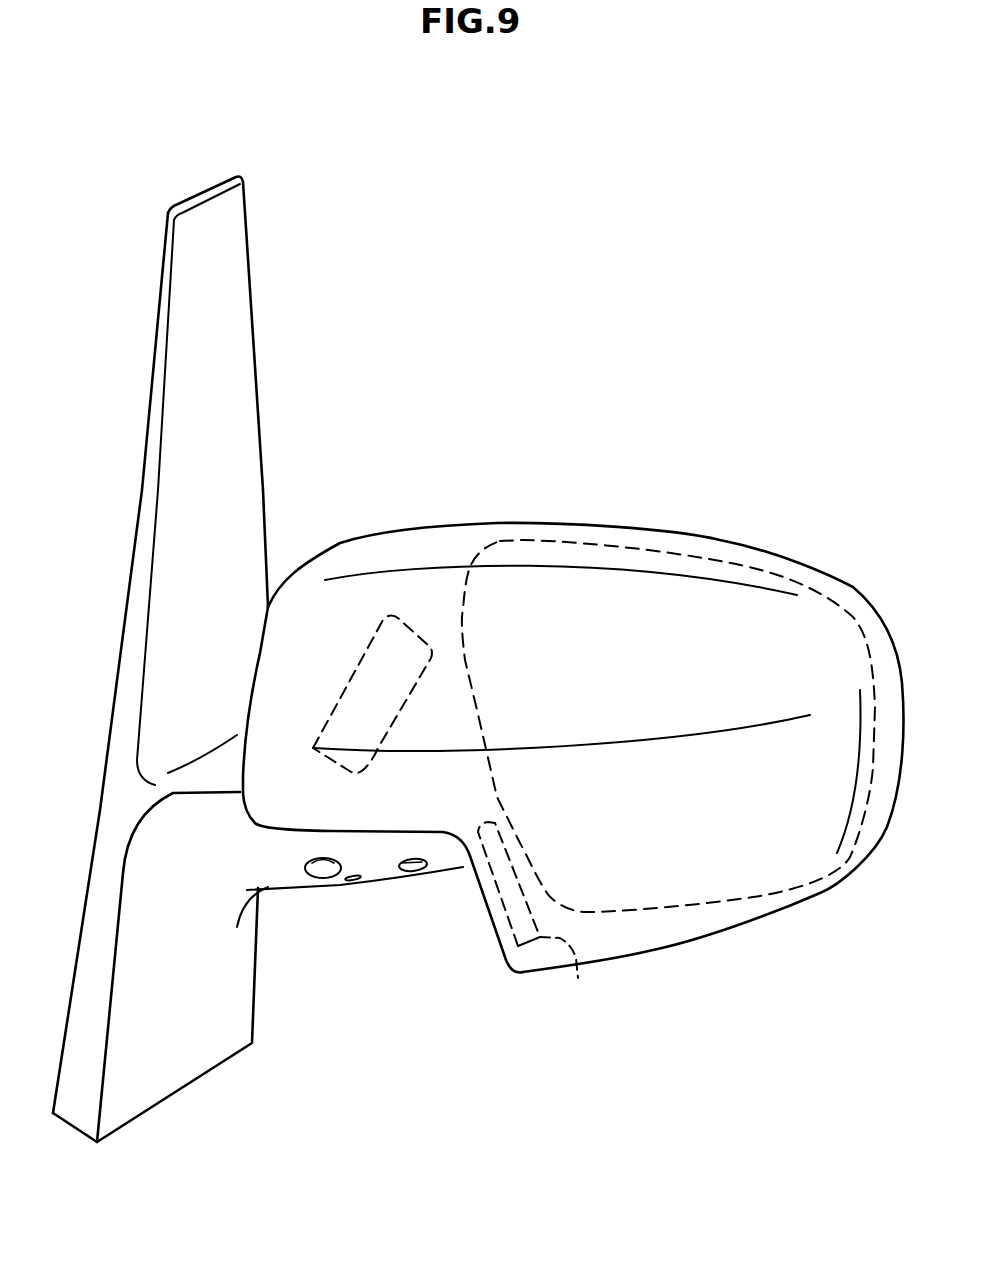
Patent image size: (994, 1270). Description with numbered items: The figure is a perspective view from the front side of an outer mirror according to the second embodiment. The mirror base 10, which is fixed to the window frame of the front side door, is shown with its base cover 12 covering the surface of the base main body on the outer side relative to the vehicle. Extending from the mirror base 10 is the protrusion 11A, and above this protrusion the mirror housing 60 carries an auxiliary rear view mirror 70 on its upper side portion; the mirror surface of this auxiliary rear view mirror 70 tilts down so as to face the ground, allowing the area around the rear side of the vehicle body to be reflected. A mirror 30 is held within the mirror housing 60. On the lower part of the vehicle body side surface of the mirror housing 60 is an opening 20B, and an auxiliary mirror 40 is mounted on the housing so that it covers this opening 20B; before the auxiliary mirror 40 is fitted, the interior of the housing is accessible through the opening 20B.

The mirror base 10 is at (373, 288).
The base cover 12 is at (245, 323).
The protrusion 11A is at (295, 877).
The mirror housing 60 is at (618, 525).
The mirror 30 is at (772, 573).
The auxiliary rear view mirror 70 is at (380, 628).
The opening 20B is at (498, 950).
The auxiliary mirror 40 is at (578, 978).